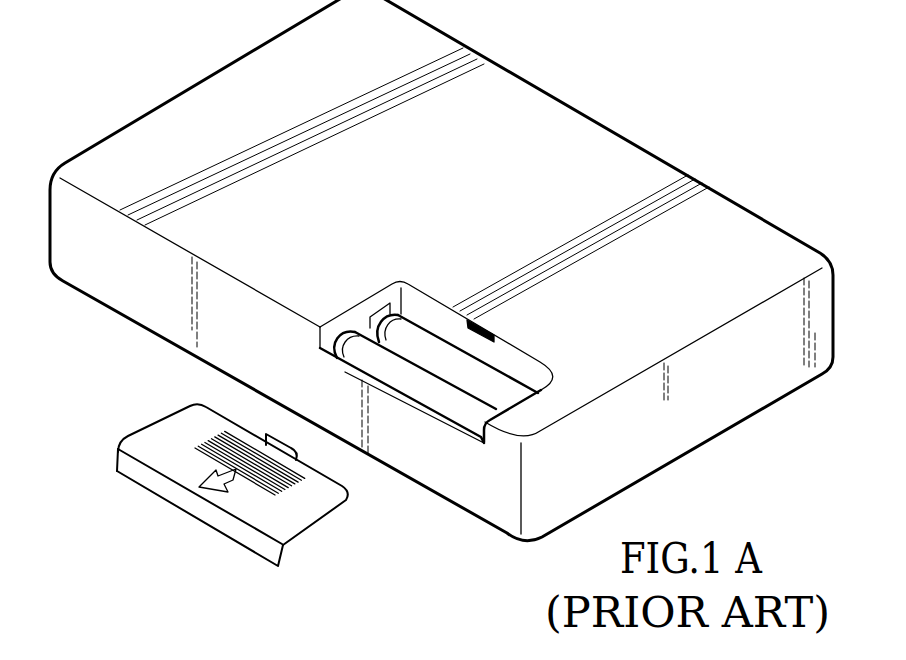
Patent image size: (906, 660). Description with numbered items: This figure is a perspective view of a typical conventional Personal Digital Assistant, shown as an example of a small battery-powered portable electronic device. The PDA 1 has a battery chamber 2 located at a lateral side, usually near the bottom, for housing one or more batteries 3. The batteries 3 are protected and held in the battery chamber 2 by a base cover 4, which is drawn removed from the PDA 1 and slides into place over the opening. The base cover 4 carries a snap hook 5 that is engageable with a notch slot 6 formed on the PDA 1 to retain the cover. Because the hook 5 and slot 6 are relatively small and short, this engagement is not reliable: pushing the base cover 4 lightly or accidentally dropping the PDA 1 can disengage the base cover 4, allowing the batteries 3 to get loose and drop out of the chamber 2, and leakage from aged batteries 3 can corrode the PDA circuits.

The PDA 1 is at (657, 190).
The battery chamber 2 is at (508, 362).
The batteries 3 is at (440, 357).
The base cover 4 is at (297, 513).
The snap hook 5 is at (270, 437).
The notch slot 6 is at (483, 328).